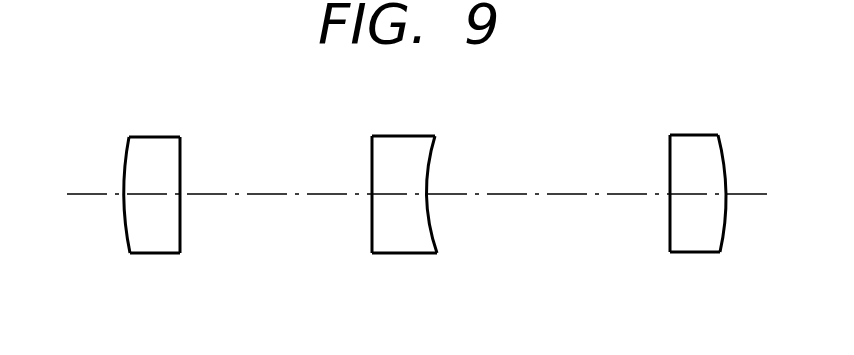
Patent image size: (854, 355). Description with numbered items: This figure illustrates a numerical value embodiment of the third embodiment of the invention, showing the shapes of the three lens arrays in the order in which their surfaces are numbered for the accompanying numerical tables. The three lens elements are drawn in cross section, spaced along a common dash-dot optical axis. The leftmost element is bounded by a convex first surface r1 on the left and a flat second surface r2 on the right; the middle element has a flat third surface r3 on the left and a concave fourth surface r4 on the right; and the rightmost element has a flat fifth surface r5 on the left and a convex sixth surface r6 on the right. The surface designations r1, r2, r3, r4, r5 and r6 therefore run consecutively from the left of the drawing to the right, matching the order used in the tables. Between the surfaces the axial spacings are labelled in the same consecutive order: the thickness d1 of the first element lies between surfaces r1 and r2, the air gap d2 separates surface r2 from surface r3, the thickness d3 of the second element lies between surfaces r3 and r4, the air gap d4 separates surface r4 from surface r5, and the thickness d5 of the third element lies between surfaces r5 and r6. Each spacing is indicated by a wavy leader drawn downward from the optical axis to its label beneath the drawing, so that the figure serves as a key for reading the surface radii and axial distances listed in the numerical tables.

The first lens surface radius of curvature r1 is at (127, 144).
The second lens surface radius of curvature r2 is at (182, 146).
The third lens surface radius of curvature r3 is at (372, 150).
The fourth lens surface radius of curvature r4 is at (437, 150).
The fifth lens surface radius of curvature r5 is at (668, 148).
The sixth lens surface radius of curvature r6 is at (723, 149).
The first axial thickness d1 is at (152, 194).
The first axial air gap d2 is at (270, 194).
The second axial thickness d3 is at (403, 194).
The second axial air gap d4 is at (568, 194).
The third axial thickness d5 is at (702, 194).